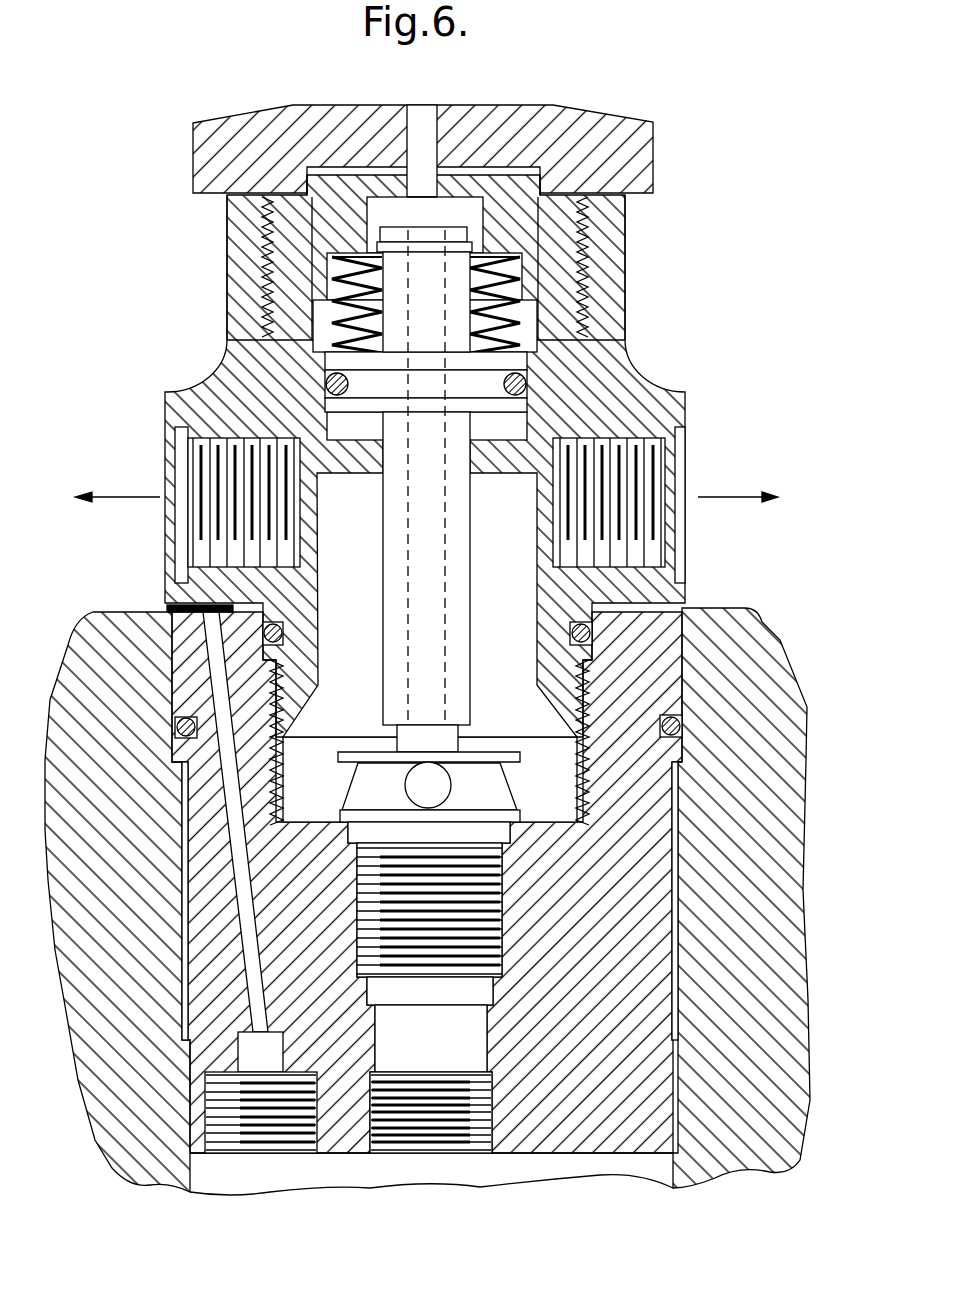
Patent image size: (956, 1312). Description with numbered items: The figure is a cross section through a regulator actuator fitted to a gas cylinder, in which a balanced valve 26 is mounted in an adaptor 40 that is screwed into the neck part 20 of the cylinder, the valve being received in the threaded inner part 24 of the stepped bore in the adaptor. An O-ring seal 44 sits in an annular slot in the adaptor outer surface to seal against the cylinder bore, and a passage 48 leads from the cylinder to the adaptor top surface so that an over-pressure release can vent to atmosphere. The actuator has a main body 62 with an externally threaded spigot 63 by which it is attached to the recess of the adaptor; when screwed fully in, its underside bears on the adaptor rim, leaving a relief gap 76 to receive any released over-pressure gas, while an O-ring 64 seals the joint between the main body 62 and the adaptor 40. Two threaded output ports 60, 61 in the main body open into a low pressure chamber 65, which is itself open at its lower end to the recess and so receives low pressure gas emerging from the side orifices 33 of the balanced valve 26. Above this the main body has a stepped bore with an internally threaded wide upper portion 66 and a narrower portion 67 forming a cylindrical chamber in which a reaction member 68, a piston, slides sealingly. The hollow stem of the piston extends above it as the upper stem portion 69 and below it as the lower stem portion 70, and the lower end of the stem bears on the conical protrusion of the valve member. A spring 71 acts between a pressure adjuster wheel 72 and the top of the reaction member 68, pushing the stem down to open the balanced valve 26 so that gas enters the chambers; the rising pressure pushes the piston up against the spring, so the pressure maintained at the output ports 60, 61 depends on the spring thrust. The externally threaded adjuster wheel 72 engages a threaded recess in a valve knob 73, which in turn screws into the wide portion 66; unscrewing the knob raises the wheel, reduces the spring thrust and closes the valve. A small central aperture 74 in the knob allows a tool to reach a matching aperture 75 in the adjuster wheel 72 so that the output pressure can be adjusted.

The neck part of the cylinder 20 is at (735, 805).
The inner part of the stepped bore 24 is at (445, 1050).
The balanced valve 26 is at (357, 917).
The side orifices 33 is at (425, 782).
The adaptor 40 is at (650, 915).
The O-ring seal 44 is at (187, 723).
The passage 48 is at (233, 838).
The output port 60 is at (215, 512).
The output port 61 is at (632, 525).
The main body 62 is at (205, 395).
The externally threaded spigot 63 is at (563, 690).
The O-ring 64 is at (590, 632).
The low pressure chamber 65 is at (365, 543).
The wide upper portion of the stepped bore 66 is at (265, 235).
The narrower portion of the stepped bore 67 is at (510, 420).
The reaction member 68 is at (330, 345).
The upper stem portion 69 is at (460, 290).
The lower stem portion 70 is at (460, 558).
The spring 71 is at (345, 290).
The pressure adjuster wheel 72 is at (520, 208).
The valve knob 73 is at (215, 145).
The central aperture 74 is at (412, 120).
The aperture in the pressure adjusting wheel 75 is at (428, 180).
The relief gap 76 is at (190, 607).